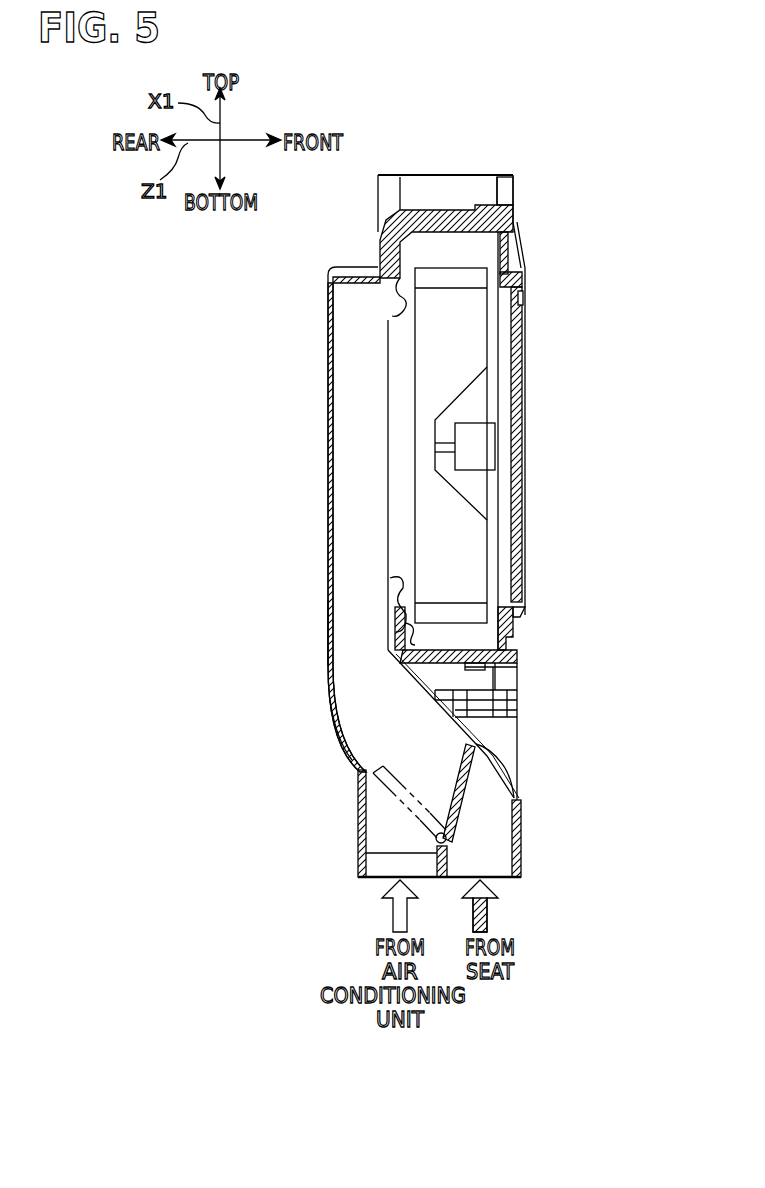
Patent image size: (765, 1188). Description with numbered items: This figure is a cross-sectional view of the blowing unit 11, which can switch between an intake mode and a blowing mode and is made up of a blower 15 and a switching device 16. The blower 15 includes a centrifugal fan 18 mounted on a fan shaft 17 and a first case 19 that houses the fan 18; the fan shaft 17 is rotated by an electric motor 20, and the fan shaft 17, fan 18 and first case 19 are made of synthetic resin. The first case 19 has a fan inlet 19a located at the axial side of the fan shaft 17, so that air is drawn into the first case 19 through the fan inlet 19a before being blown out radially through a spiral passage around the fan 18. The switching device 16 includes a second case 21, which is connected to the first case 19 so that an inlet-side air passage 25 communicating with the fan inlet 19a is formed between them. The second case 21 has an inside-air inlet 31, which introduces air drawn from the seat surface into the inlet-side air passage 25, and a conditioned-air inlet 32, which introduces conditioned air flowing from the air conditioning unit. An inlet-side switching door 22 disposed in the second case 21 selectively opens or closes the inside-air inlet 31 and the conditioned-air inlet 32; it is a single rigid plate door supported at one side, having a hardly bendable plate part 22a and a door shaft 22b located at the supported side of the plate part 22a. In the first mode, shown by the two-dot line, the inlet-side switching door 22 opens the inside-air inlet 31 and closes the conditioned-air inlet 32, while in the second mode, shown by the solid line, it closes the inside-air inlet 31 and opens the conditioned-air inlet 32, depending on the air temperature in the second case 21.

The blowing unit 11 is at (266, 285).
The blower 15 is at (521, 298).
The switching device 16 is at (344, 741).
The fan shaft 17 is at (443, 440).
The centrifugal fan 18 is at (388, 340).
The first case 19 is at (520, 345).
The fan inlet 19a is at (387, 497).
The electric motor 20 is at (478, 433).
The second case 21 is at (330, 675).
The inlet-side switching door 22 is at (605, 822).
The plate part 22a is at (447, 842).
The door shaft 22b is at (447, 862).
The inlet-side air passage 25 is at (352, 610).
The inside-air inlet 31 is at (470, 800).
The conditioned-air inlet 32 is at (400, 853).